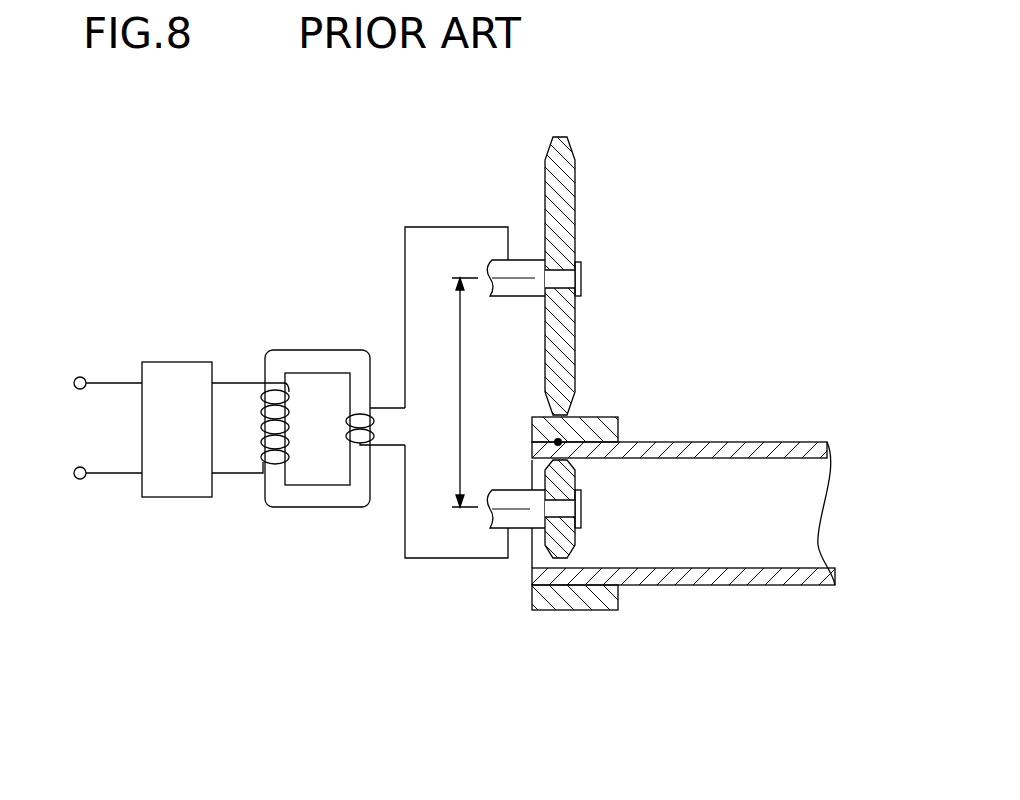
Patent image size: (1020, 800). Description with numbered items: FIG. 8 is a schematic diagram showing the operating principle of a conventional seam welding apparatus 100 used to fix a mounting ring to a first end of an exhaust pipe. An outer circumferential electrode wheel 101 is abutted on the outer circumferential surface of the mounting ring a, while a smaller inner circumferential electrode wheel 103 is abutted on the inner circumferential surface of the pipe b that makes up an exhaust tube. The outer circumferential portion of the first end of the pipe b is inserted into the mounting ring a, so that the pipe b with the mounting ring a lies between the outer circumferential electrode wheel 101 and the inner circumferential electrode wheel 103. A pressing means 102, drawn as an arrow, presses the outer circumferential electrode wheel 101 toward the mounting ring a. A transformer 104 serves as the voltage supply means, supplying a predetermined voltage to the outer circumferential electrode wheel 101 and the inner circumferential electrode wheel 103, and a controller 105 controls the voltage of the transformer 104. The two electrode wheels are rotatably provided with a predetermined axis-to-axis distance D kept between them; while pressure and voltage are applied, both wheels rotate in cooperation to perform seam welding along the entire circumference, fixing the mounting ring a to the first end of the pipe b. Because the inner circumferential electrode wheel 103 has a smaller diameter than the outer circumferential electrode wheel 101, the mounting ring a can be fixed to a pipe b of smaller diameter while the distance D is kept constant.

The seam welding apparatus 100 is at (742, 236).
The outer circumferential electrode wheel 101 is at (548, 165).
The pressing means 102 is at (527, 260).
The inner circumferential electrode wheel 103 is at (555, 543).
The transformer 104 is at (288, 510).
The controller 105 is at (178, 498).
The axis-to-axis distance D is at (458, 392).
The mounting ring a is at (577, 600).
The pipe b is at (657, 575).